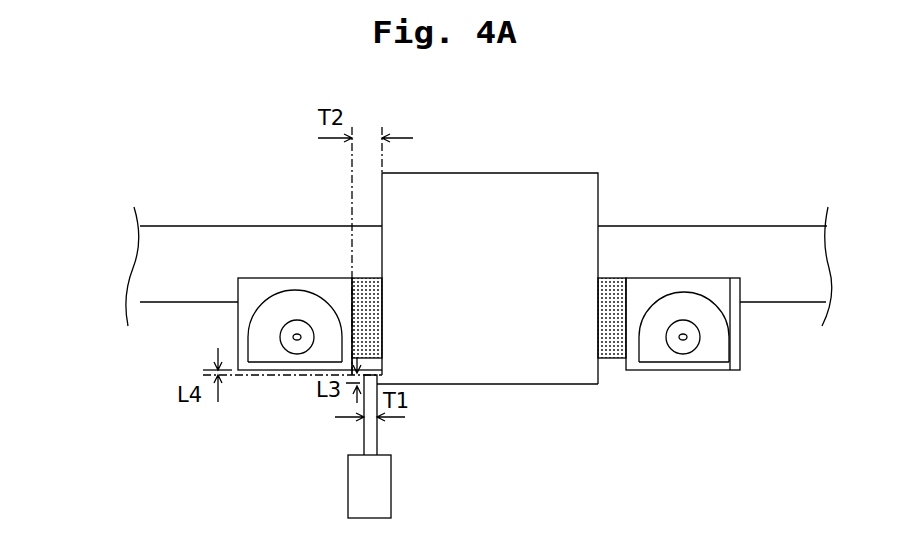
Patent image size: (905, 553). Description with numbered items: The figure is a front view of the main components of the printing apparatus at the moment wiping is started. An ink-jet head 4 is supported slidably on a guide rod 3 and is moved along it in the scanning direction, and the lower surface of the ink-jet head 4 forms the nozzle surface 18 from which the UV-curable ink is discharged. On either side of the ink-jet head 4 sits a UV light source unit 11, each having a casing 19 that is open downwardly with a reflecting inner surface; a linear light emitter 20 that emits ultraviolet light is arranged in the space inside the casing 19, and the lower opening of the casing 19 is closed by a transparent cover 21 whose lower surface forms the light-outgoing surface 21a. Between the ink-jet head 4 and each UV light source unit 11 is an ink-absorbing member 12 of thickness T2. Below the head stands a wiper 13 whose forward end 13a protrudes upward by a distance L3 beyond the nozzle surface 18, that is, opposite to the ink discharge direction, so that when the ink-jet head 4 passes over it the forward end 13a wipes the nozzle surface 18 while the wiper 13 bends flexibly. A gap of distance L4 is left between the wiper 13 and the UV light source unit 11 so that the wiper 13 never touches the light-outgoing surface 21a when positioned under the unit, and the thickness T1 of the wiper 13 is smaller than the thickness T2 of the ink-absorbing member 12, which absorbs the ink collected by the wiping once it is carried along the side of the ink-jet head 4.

The guide rod 3 is at (187, 242).
The ink-jet head 4 is at (477, 173).
The UV light source unit 11 is at (275, 278).
The ink-absorbing member 12 is at (367, 303).
The wiper 13 is at (377, 440).
The forward end 13a is at (378, 379).
The nozzle surface 18 is at (565, 386).
The casing 19 is at (740, 366).
The linear light emitter 20 is at (280, 338).
The transparent cover 21 is at (710, 367).
The light-outgoing surface 21a is at (287, 370).